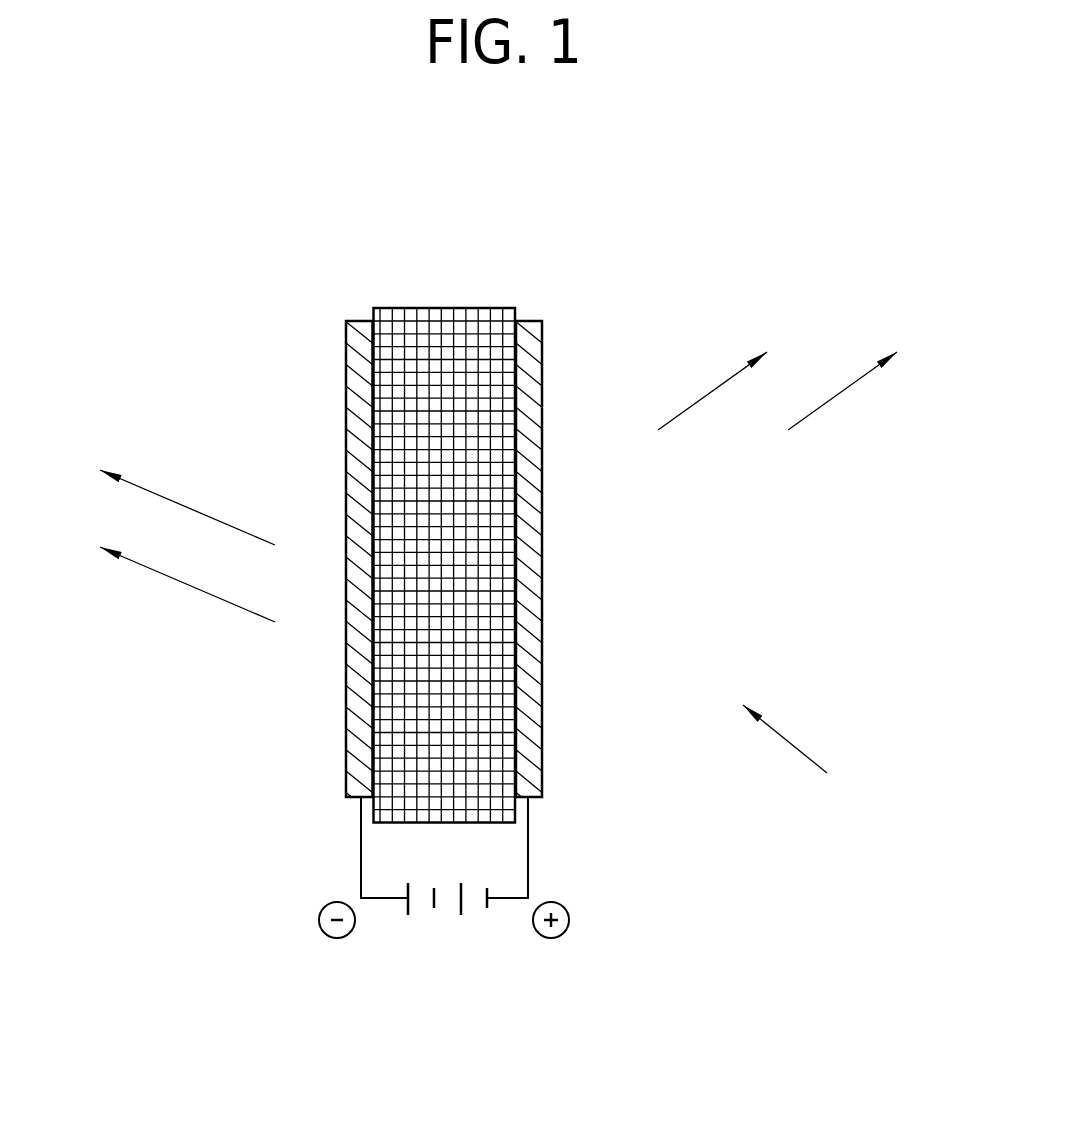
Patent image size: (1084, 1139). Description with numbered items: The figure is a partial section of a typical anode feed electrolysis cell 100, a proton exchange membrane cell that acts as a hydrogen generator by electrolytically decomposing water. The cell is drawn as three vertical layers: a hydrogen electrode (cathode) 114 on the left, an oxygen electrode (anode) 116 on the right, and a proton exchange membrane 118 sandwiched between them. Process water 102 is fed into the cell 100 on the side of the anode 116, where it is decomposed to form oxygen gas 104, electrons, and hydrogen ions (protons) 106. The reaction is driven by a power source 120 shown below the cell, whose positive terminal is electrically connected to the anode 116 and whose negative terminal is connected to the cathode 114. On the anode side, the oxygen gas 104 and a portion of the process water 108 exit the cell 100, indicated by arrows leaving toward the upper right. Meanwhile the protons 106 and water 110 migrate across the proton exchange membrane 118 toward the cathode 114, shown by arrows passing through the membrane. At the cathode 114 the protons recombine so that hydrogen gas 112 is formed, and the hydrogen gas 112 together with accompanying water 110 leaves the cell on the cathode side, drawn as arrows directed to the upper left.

The anode feed electrolysis cell 100 is at (478, 287).
The process water 102 is at (804, 755).
The oxygen gas 104 is at (730, 375).
The hydrogen ions (protons) 106 is at (483, 583).
The portion of the process water 108 is at (862, 381).
The water 110 is at (717, 633).
The hydrogen gas 112 is at (164, 493).
The hydrogen electrode (cathode) 114 is at (362, 317).
The oxygen electrode (anode) 116 is at (523, 317).
The proton exchange membrane 118 is at (437, 307).
The power source 120 is at (550, 845).